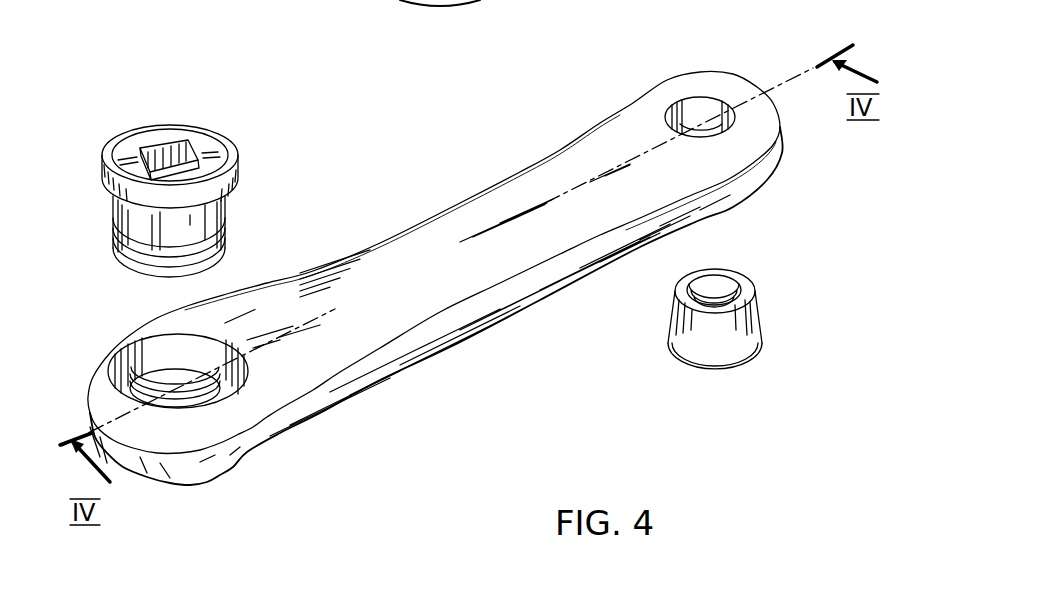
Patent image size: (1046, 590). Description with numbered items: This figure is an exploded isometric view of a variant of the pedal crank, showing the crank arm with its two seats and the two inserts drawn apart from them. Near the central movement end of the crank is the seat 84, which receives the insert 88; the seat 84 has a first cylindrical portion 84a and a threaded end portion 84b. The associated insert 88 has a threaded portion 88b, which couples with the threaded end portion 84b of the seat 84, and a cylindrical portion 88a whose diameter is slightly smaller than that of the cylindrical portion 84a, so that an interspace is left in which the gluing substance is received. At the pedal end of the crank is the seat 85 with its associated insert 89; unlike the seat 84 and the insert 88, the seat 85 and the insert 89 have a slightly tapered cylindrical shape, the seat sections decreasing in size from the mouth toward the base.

The seat 84 is at (113, 340).
The first cylindrical portion 84a is at (190, 383).
The threaded end portion 84b is at (203, 393).
The seat 85 is at (709, 65).
The insert 88 is at (220, 182).
The cylindrical portion 88a is at (228, 206).
The threaded portion 88b is at (228, 250).
The insert 89 is at (660, 366).